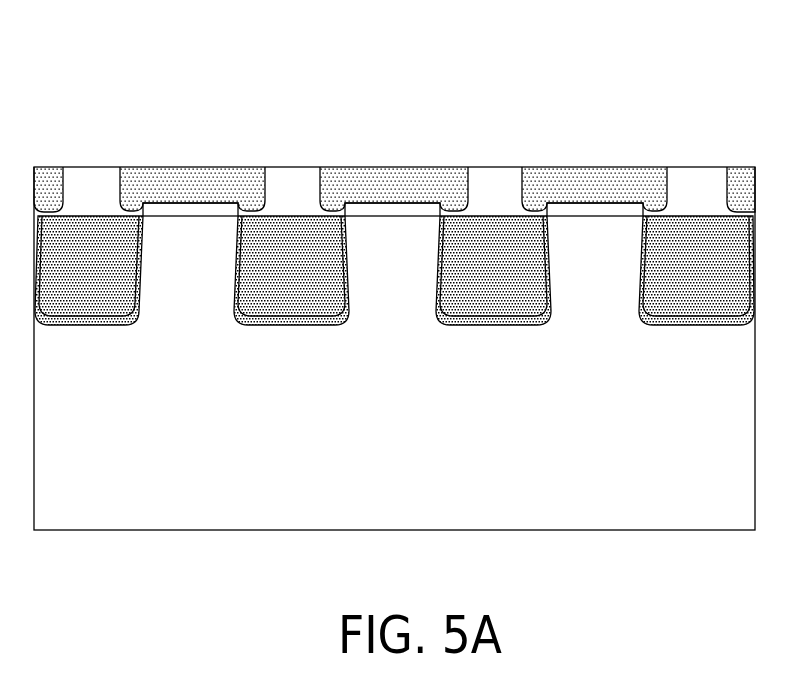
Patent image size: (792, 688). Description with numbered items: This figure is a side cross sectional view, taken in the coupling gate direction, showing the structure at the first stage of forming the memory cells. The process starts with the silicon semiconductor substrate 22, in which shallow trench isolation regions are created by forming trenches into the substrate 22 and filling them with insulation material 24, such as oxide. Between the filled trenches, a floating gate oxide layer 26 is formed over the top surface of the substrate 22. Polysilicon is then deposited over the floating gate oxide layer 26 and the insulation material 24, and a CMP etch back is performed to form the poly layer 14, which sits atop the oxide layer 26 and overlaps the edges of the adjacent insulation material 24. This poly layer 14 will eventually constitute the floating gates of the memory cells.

The poly layer 14 is at (638, 180).
The silicon semiconductor substrate 22 is at (106, 495).
The insulation material 24 is at (492, 292).
The floating gate oxide layer 26 is at (603, 212).